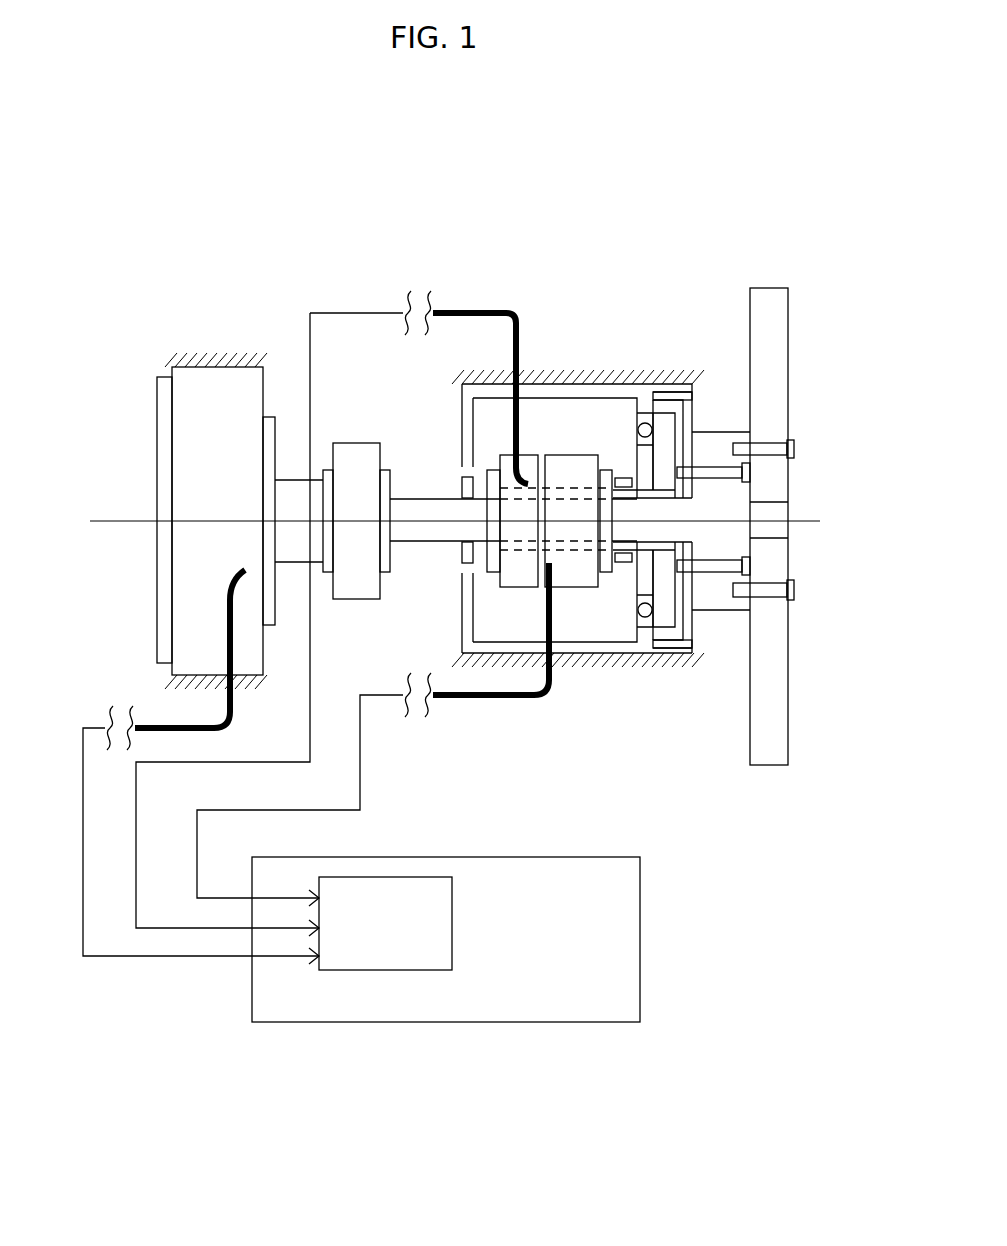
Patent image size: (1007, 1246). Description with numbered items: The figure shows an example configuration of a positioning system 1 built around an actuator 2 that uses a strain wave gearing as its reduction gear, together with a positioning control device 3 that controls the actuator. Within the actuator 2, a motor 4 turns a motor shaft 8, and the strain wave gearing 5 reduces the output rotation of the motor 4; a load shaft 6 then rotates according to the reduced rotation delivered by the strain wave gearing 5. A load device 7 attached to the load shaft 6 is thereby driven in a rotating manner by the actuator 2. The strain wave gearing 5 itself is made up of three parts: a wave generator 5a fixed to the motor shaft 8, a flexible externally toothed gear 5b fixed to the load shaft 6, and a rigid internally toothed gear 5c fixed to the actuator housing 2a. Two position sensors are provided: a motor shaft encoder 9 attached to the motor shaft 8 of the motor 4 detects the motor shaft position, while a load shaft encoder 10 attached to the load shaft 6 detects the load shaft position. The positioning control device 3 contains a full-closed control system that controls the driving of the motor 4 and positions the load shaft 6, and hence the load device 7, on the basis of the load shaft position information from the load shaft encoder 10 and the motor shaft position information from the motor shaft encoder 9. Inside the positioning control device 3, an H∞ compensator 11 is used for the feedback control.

The positioning system 1 is at (262, 270).
The actuator 2 is at (558, 357).
The actuator housing 2a is at (547, 384).
The positioning control device 3 is at (520, 1022).
The motor 4 is at (562, 452).
The strain wave gearing 5 is at (676, 390).
The wave generator 5a is at (662, 435).
The flexible externally toothed gear 5b is at (637, 432).
The rigid internally toothed gear 5c is at (652, 398).
The load shaft 6 is at (420, 492).
The load device 7 is at (762, 288).
The motor shaft 8 is at (580, 565).
The motor shaft encoder 9 is at (517, 590).
The load shaft encoder 10 is at (214, 383).
The H∞ compensator 11 is at (380, 972).